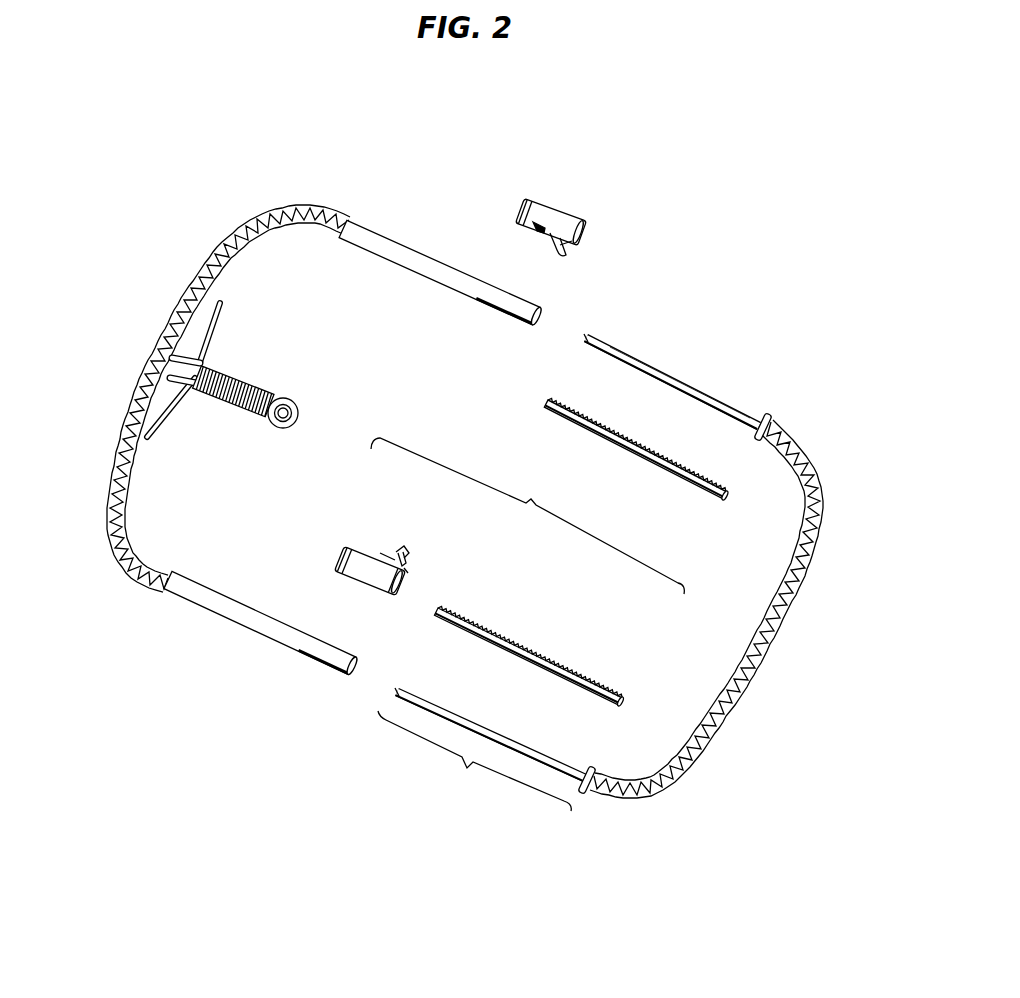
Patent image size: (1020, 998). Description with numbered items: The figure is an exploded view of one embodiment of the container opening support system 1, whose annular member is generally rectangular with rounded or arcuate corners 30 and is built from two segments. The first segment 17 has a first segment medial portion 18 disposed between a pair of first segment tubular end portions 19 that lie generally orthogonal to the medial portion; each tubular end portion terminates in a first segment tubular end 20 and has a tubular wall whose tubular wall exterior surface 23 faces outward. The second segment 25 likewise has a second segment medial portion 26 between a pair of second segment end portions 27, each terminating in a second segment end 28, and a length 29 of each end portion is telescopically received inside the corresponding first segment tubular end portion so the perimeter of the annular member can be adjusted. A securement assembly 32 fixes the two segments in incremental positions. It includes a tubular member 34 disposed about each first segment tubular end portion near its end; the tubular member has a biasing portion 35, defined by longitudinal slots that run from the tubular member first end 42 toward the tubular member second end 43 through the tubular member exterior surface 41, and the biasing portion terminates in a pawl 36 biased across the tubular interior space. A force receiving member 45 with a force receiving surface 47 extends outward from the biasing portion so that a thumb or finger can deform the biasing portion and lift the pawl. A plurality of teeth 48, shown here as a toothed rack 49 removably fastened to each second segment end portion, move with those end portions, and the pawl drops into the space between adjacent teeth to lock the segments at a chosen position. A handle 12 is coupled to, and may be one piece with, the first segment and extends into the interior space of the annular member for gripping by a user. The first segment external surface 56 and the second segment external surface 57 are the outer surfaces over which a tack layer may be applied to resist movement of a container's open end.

The container opening support system 1 is at (632, 98).
The handle 12 is at (276, 426).
The first segment 17 is at (230, 226).
The first segment medial portion 18 is at (156, 350).
The first segment tubular end portions 19 is at (481, 310).
The first segment tubular end 20 is at (542, 312).
The tubular wall exterior surface 23 is at (498, 298).
The second segment 25 is at (729, 727).
The second segment medial portion 26 is at (757, 660).
The second segment end portions 27 is at (688, 380).
The second segment end 28 is at (590, 333).
The length 29 is at (469, 771).
The corners 30 is at (288, 206).
The securement assembly 32 is at (527, 516).
The tubular member 34 is at (574, 203).
The biasing portion 35 is at (550, 244).
The pawl 36 is at (580, 240).
The tubular member exterior surface 41 is at (528, 198).
The tubular member first end 42 is at (396, 587).
The tubular member second end 43 is at (336, 553).
The force receiving member 45 is at (398, 548).
The force receiving surface 47 is at (565, 255).
The plurality of teeth 48 is at (626, 448).
The toothed rack 49 is at (729, 492).
The first segment external surface 56 is at (463, 290).
The second segment external surface 57 is at (723, 400).